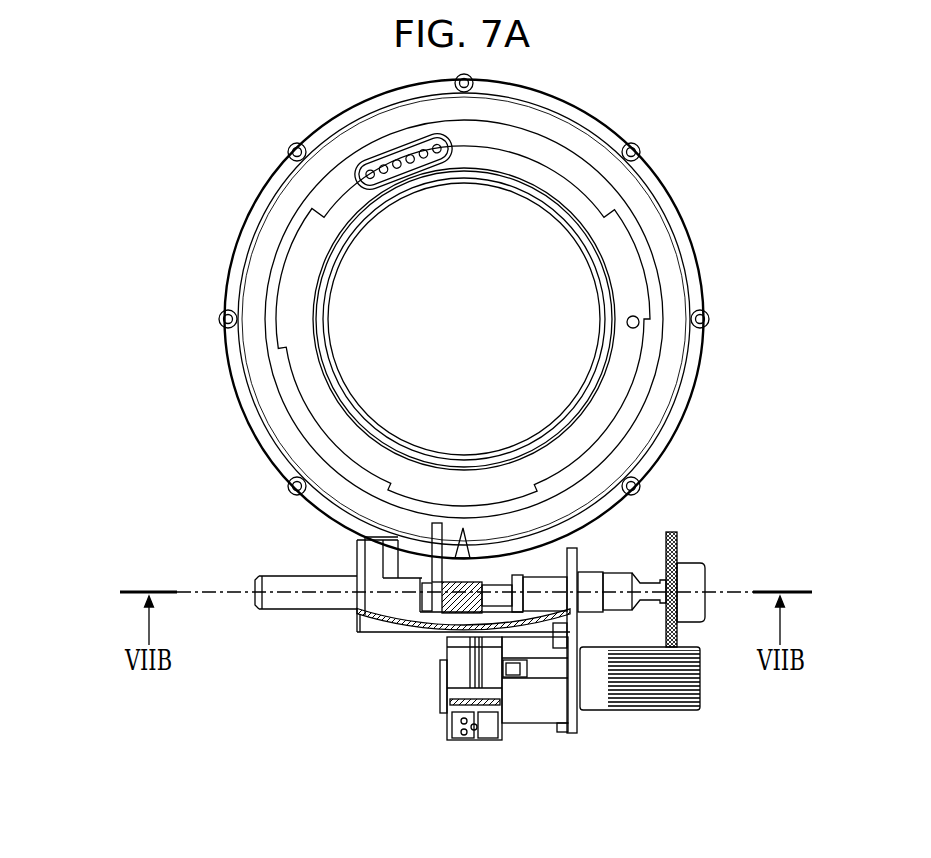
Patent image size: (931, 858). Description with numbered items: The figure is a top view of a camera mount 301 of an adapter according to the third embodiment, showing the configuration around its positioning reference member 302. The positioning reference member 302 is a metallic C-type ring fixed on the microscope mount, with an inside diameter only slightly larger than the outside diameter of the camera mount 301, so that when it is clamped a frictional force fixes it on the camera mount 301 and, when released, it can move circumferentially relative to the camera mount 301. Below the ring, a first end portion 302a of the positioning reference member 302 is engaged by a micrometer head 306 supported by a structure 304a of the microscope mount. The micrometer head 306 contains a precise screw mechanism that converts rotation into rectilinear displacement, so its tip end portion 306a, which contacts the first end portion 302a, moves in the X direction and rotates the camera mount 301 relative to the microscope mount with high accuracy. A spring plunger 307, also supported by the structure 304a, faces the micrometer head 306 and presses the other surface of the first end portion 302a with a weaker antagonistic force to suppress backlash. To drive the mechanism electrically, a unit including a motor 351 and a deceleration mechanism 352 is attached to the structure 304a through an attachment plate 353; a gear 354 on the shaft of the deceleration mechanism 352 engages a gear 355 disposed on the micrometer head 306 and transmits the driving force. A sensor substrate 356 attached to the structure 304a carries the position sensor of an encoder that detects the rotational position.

The camera mount 301 is at (322, 203).
The positioning reference member 302 is at (672, 364).
The first end portion 302a is at (466, 582).
The structure 304a is at (358, 570).
The micrometer head 306 is at (616, 583).
The tip end portion 306a is at (500, 587).
The spring plunger 307 is at (273, 598).
The motor 351 is at (463, 728).
The deceleration mechanism 352 is at (543, 705).
The attachment plate 353 is at (577, 712).
The gear 354 is at (657, 697).
The gear 355 is at (690, 585).
The sensor substrate 356 is at (358, 625).